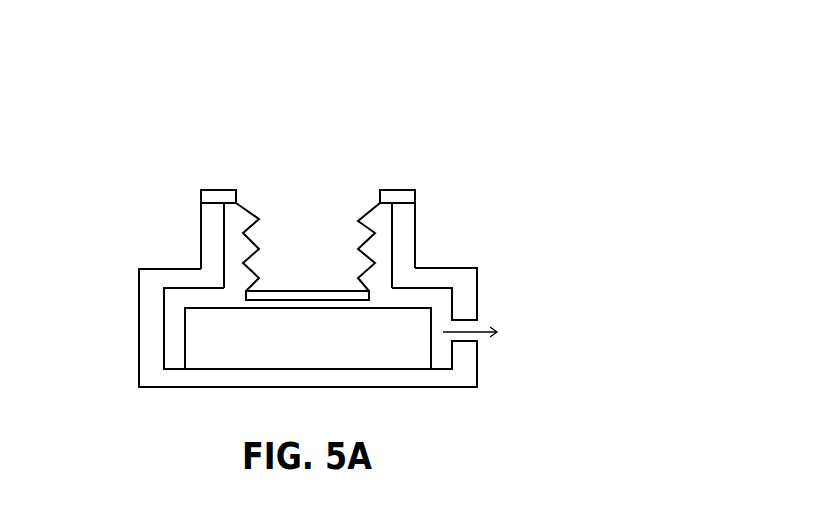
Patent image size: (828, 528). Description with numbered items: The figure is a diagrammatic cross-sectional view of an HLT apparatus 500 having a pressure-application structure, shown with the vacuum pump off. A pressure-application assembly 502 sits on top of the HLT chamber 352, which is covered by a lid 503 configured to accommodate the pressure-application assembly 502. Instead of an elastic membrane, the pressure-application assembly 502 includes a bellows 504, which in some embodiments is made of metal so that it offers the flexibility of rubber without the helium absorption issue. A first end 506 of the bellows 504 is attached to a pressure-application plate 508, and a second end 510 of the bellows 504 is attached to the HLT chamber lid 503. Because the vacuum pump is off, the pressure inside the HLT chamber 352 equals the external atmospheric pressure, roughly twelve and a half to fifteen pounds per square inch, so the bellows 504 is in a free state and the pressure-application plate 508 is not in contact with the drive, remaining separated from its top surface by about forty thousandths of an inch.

The HLT apparatus 500 is at (146, 116).
The pressure-application assembly 502 is at (336, 168).
The lid 503 is at (152, 275).
The bellows 504 is at (357, 244).
The first end 506 is at (243, 292).
The pressure-application plate 508 is at (270, 291).
The second end 510 is at (236, 190).
The HLT chamber 352 is at (168, 303).